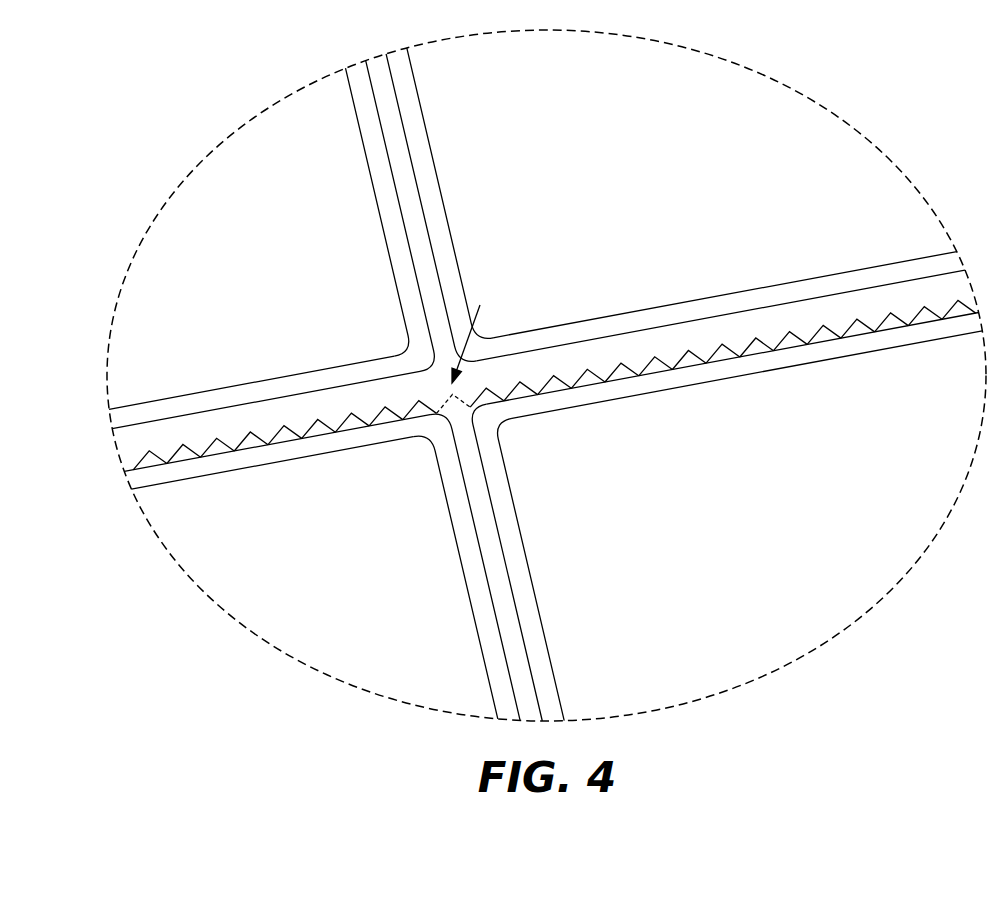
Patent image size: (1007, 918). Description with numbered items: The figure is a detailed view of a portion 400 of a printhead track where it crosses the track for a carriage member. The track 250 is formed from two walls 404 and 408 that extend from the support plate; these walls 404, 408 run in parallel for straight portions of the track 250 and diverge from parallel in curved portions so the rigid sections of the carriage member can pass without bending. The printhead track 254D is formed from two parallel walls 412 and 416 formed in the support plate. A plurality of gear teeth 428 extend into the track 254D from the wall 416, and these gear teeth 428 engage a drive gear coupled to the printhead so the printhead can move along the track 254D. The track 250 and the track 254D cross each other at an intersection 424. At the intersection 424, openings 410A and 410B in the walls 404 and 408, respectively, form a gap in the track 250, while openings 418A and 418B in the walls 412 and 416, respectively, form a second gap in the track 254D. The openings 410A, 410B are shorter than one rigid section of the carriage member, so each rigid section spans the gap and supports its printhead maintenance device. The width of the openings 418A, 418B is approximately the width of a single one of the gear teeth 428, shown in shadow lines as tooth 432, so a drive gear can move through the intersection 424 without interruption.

The portion of the track 400 is at (270, 100).
The wall 404 is at (395, 240).
The wall 408 is at (443, 236).
The track 250 is at (522, 683).
The printhead track 254D is at (330, 402).
The wall 412 is at (207, 398).
The wall 416 is at (308, 448).
The opening 410A is at (433, 390).
The opening 410B is at (475, 381).
The opening 418A is at (443, 338).
The opening 418B is at (452, 427).
The intersection 424 is at (478, 332).
The gear teeth 428 is at (549, 389).
The tooth 432 is at (455, 400).